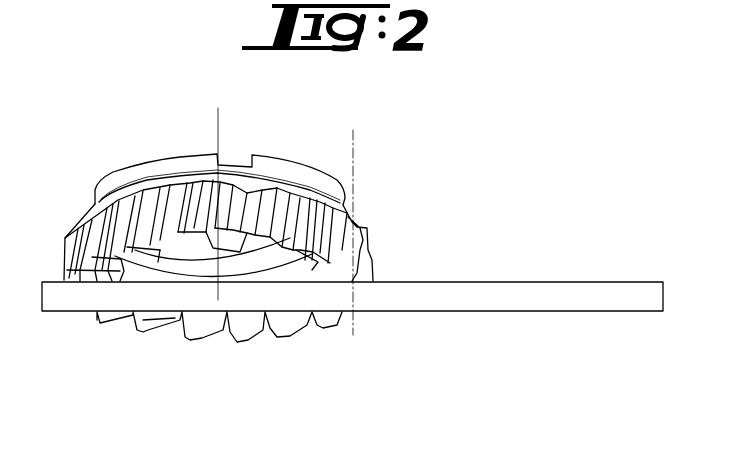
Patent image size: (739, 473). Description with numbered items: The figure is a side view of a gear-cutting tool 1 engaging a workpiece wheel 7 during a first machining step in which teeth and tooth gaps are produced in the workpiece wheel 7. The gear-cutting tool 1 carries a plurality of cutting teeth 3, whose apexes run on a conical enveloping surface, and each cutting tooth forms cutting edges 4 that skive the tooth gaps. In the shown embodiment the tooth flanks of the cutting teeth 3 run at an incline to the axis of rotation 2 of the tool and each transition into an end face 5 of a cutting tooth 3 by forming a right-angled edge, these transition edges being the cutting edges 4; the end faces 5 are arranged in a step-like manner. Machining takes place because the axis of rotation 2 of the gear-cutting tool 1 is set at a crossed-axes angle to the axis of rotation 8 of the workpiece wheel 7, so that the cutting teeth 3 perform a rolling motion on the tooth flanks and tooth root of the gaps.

The gear-cutting tool 1 is at (268, 243).
The axis of rotation 2 is at (218, 130).
The cutting teeth 3 is at (335, 228).
The cutting edges 4 is at (323, 247).
The end face 5 is at (313, 257).
The workpiece wheel 7 is at (537, 281).
The axis of rotation 8 is at (353, 143).